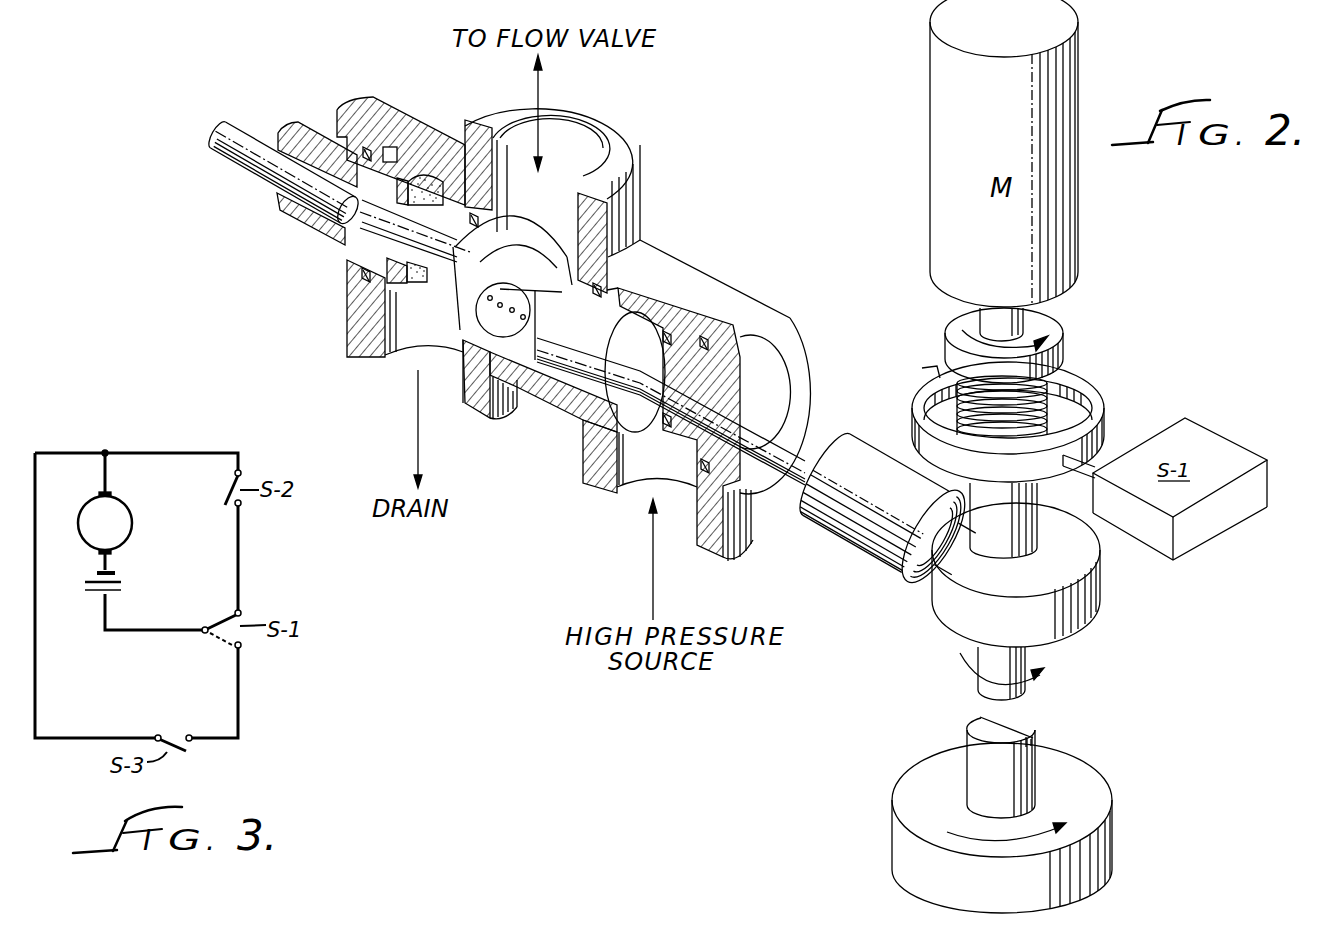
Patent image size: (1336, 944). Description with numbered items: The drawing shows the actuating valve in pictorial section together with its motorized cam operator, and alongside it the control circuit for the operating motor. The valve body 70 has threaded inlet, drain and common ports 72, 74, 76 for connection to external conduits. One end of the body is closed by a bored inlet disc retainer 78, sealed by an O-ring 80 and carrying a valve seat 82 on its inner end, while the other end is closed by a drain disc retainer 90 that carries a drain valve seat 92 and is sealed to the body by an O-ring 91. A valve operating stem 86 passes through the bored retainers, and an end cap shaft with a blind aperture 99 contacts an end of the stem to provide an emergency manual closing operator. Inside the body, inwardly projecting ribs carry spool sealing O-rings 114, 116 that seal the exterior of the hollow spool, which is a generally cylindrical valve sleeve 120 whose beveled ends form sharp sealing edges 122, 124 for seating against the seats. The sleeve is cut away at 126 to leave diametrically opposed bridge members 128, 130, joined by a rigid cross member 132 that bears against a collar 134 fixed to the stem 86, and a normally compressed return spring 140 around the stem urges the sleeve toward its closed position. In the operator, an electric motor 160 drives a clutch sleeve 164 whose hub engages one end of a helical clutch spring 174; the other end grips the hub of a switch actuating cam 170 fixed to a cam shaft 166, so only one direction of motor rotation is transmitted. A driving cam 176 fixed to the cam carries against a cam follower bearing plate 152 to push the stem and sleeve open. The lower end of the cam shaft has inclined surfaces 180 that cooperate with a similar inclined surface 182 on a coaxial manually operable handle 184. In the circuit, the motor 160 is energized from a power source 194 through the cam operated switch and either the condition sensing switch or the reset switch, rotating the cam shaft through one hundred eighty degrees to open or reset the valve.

In FIG. 2, the valve body 70 is at (677, 267).
In FIG. 2, the inlet port 72 is at (642, 470).
In FIG. 2, the drain port 74 is at (358, 334).
In FIG. 2, the common port 76 is at (585, 163).
In FIG. 2, the inlet disc retainer 78 is at (785, 372).
In FIG. 2, the O-ring 80 is at (735, 322).
In FIG. 2, the valve seat 82 is at (668, 360).
In FIG. 2, the valve operating stem 86 is at (797, 447).
In FIG. 2, the drain disc retainer 90 is at (347, 262).
In FIG. 2, the O-ring 91 is at (350, 290).
In FIG. 2, the drain valve seat 92 is at (400, 187).
In FIG. 2, the blind aperture 99 is at (350, 236).
In FIG. 2, the spool sealing O-ring 114 is at (647, 248).
In FIG. 2, the spool sealing O-ring 116 is at (495, 200).
In FIG. 2, the valve sleeve 120 is at (687, 283).
In FIG. 2, the sealing edge 122 is at (632, 440).
In FIG. 2, the sealing edge 124 is at (397, 298).
In FIG. 2, the cut away portion 126 is at (463, 340).
In FIG. 2, the bridge member 128 is at (552, 300).
In FIG. 2, the bridge member 130 is at (508, 414).
In FIG. 2, the cross member 132 is at (470, 370).
In FIG. 2, the collar 134 is at (545, 322).
In FIG. 2, the return spring 140 is at (443, 247).
In FIG. 2, the cam follower bearing plate 152 is at (915, 560).
In FIG. 2, the electric motor 160 is at (1072, 229).
In FIG. 3, the electric motor 160 is at (127, 525).
In FIG. 2, the clutch sleeve 164 is at (1057, 328).
In FIG. 2, the cam shaft 166 is at (1022, 690).
In FIG. 2, the switch actuating cam 170 is at (1100, 397).
In FIG. 2, the helical clutch spring 174 is at (1047, 390).
In FIG. 2, the driving cam 176 is at (1100, 604).
In FIG. 2, the inclined surfaces 180 is at (1012, 705).
In FIG. 2, the inclined surface 182 is at (1033, 737).
In FIG. 2, the manually operable handle 184 is at (1107, 800).
In FIG. 3, the power source 194 is at (122, 587).